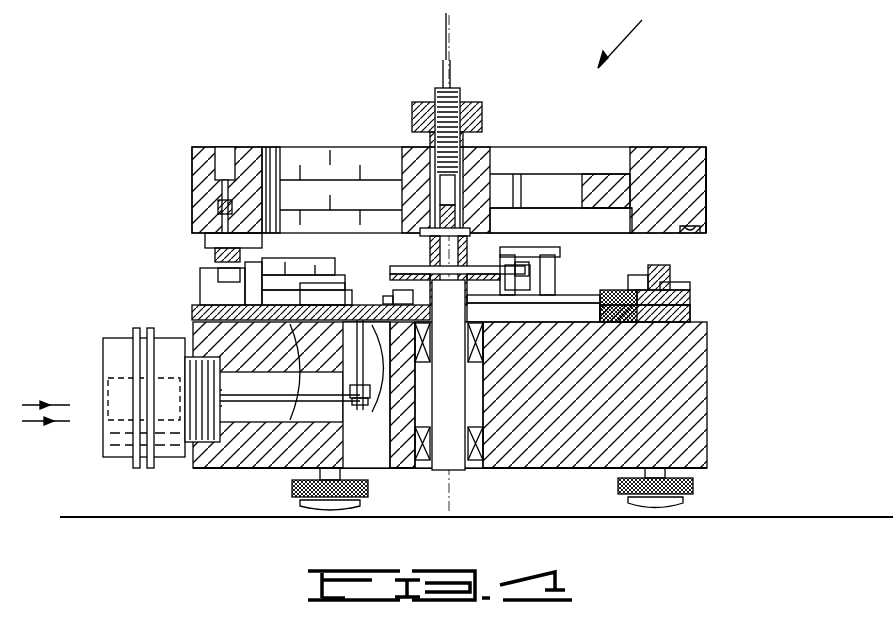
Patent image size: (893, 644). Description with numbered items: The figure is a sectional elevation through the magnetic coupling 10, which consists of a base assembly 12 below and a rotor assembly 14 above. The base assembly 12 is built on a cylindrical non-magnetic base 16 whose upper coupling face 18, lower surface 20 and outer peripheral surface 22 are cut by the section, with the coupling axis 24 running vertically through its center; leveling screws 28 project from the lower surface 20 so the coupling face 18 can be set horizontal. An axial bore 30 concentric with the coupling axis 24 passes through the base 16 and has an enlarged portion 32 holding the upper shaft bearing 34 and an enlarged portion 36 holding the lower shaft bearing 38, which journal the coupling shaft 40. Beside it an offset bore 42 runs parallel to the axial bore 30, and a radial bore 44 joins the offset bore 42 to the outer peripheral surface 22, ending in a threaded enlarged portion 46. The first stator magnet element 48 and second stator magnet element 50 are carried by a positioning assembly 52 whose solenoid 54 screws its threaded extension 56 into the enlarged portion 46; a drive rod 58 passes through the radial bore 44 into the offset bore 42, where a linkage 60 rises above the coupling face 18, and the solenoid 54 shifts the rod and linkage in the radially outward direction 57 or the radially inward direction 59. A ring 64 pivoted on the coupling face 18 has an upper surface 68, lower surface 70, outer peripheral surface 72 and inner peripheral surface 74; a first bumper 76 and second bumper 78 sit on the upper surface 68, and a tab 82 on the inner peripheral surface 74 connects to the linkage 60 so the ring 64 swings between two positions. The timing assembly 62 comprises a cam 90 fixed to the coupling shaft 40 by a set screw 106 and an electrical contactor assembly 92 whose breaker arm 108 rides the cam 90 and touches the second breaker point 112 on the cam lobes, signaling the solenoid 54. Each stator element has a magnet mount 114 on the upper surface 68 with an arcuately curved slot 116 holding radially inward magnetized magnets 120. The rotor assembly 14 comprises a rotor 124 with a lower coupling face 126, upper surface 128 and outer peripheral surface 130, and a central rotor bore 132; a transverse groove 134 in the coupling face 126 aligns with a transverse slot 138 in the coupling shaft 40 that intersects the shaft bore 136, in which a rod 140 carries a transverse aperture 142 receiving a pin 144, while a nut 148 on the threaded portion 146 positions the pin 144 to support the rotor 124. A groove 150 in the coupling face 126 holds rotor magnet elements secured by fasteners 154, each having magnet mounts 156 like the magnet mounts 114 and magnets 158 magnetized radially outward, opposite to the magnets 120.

The magnetic coupling 10 is at (634, 40).
The base assembly 12 is at (708, 366).
The rotor assembly 14 is at (678, 156).
The cylindrical base 16 is at (700, 420).
The coupling face 18 is at (708, 320).
The lower surface 20 is at (572, 470).
The outer peripheral surface 22 is at (708, 345).
The coupling axis 24 is at (450, 32).
The leveling screws 28 is at (292, 488).
The axial bore 30 is at (478, 388).
The enlarged portion 32 is at (478, 352).
The upper shaft bearing 34 is at (478, 335).
The enlarged portion 36 is at (478, 445).
The lower shaft bearing 38 is at (478, 428).
The coupling shaft 40 is at (445, 472).
The offset bore 42 is at (390, 442).
The radial bore 44 is at (292, 416).
The enlarged portion 46 is at (222, 414).
The first stator magnet element 48 is at (205, 300).
The second stator magnet element 50 is at (690, 286).
The positioning assembly 52 is at (190, 314).
The solenoid 54 is at (103, 355).
The threaded extension 56 is at (195, 445).
The radially outward direction 57 is at (46, 405).
The drive rod 58 is at (290, 398).
The radially inward direction 59 is at (35, 428).
The linkage 60 is at (369, 379).
The timing assembly 62 is at (560, 272).
The ring 64 is at (700, 306).
The upper surface 68 is at (688, 296).
The lower surface 70 is at (660, 324).
The outer peripheral surface 72 is at (692, 313).
The inner peripheral surface 74 is at (620, 323).
The first bumper 76 is at (398, 278).
The second bumper 78 is at (488, 300).
The tab 82 is at (290, 370).
The cam 90 is at (400, 268).
The electrical contactor assembly 92 is at (545, 280).
The set screw 106 is at (420, 300).
The breaker arm 108 is at (512, 248).
The second breaker point 112 is at (570, 255).
The magnet mount 114 is at (640, 275).
The arcuately curved slot 116 is at (665, 266).
The magnets 120 is at (262, 278).
The rotor 124 is at (657, 152).
The coupling face 126 is at (708, 232).
The upper surface 128 is at (640, 148).
The outer peripheral surface 130 is at (708, 160).
The rotor bore 132 is at (432, 150).
The transverse groove 134 is at (395, 212).
The shaft bore 136 is at (468, 152).
The transverse slot 138 is at (422, 236).
The rod 140 is at (458, 90).
The transverse aperture 142 is at (492, 178).
The pin 144 is at (525, 178).
The threaded portion 146 is at (436, 90).
The nut 148 is at (482, 112).
The groove 150 is at (700, 228).
The fasteners 154 is at (226, 178).
The magnet mounts 156 is at (222, 215).
The magnets 158 is at (268, 155).